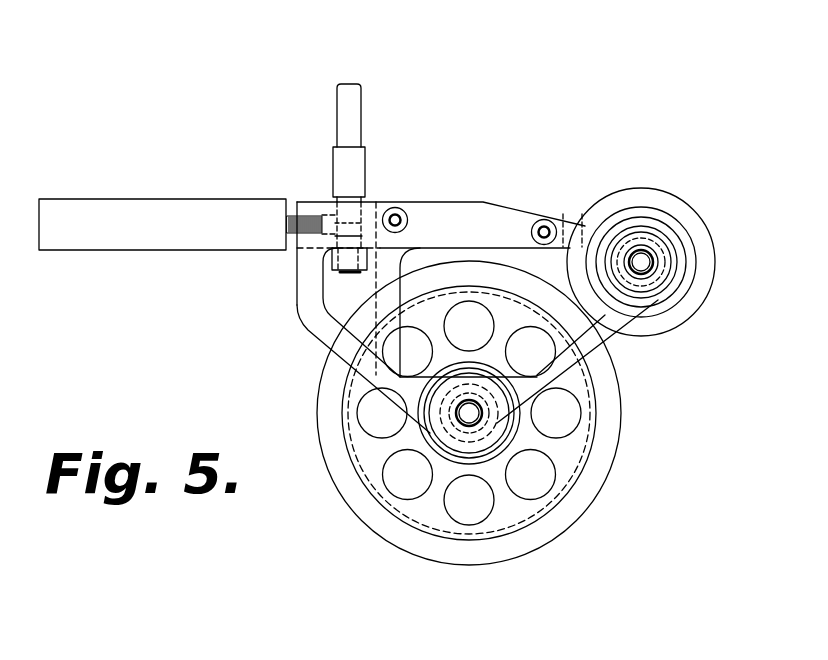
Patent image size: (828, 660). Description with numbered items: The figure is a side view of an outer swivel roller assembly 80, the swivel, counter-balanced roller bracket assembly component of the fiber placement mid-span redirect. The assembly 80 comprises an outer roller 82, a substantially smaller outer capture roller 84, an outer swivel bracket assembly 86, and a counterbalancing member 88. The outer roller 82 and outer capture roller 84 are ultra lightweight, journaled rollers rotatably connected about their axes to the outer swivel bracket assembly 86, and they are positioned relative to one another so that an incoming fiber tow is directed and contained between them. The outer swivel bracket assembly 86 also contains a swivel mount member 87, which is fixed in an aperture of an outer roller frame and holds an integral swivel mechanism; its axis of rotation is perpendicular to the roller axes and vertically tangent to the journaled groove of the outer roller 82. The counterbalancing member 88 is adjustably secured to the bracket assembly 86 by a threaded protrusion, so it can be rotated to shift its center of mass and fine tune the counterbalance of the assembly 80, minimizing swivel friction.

The outer swivel roller assembly 80 is at (536, 104).
The outer roller 82 is at (481, 557).
The outer capture roller 84 is at (707, 272).
The outer swivel bracket assembly 86 is at (502, 220).
The swivel mount member 87 is at (352, 122).
The counterbalancing member 88 is at (160, 212).